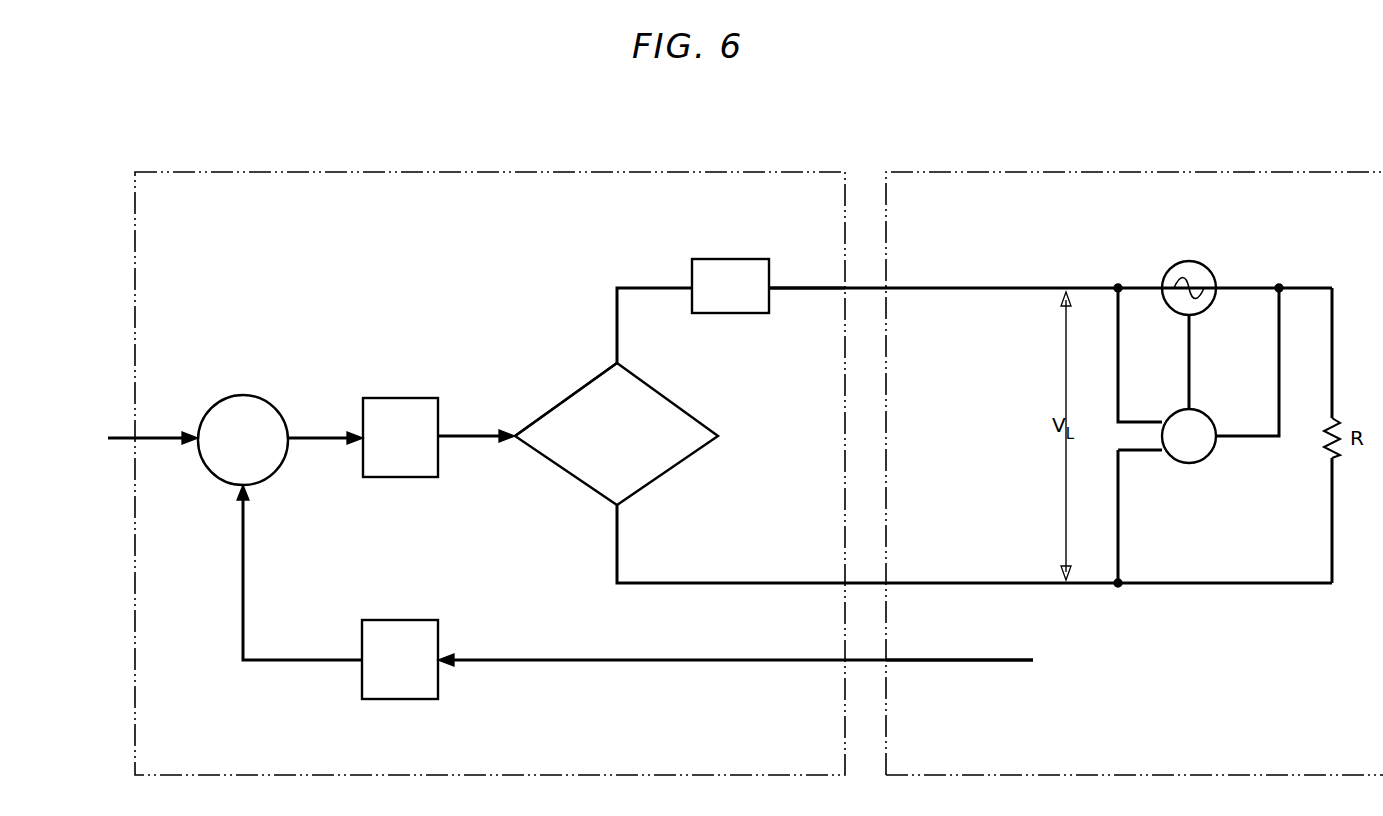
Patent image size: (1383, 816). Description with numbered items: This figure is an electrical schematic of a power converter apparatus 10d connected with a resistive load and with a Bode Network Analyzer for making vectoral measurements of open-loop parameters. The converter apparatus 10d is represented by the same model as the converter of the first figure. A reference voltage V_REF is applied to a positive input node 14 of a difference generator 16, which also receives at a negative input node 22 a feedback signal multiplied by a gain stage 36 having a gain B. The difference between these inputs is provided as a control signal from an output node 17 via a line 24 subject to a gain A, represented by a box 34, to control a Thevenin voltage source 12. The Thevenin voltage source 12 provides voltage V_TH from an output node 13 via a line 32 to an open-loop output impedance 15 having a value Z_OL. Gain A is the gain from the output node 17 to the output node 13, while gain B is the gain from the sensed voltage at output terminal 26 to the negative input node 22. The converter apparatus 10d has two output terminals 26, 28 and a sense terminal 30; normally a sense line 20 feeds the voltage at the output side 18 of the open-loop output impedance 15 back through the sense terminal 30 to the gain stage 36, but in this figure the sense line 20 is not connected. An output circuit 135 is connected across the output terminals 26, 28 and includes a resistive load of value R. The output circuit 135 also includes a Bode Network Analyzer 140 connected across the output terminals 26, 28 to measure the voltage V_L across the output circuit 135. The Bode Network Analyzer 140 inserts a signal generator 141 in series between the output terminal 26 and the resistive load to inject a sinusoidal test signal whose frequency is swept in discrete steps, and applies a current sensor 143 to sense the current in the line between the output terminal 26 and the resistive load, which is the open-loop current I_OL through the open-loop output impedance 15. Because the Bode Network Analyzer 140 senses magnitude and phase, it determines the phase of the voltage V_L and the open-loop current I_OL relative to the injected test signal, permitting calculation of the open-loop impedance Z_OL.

The converter apparatus 10d is at (765, 171).
The output circuit 135 is at (1220, 128).
The positive input node 14 is at (194, 446).
The difference generator 16 is at (243, 395).
The output node 17 is at (290, 426).
The box 34 is at (405, 398).
The line 24 is at (455, 430).
The Thevenin voltage source 12 is at (680, 400).
The output node 13 is at (613, 365).
The line 32 is at (616, 304).
The open-loop output impedance 15 is at (731, 259).
The output terminal 26 is at (845, 287).
The output side 18 is at (810, 294).
The output terminal 28 is at (845, 582).
The sense terminal 30 is at (845, 662).
The sense line 20 is at (932, 662).
The gain stage 36 is at (405, 620).
The negative input node 22 is at (248, 488).
The signal generator 141 is at (1170, 270).
The current sensor 143 is at (1280, 284).
The Bode Network Analyzer 140 is at (1210, 418).